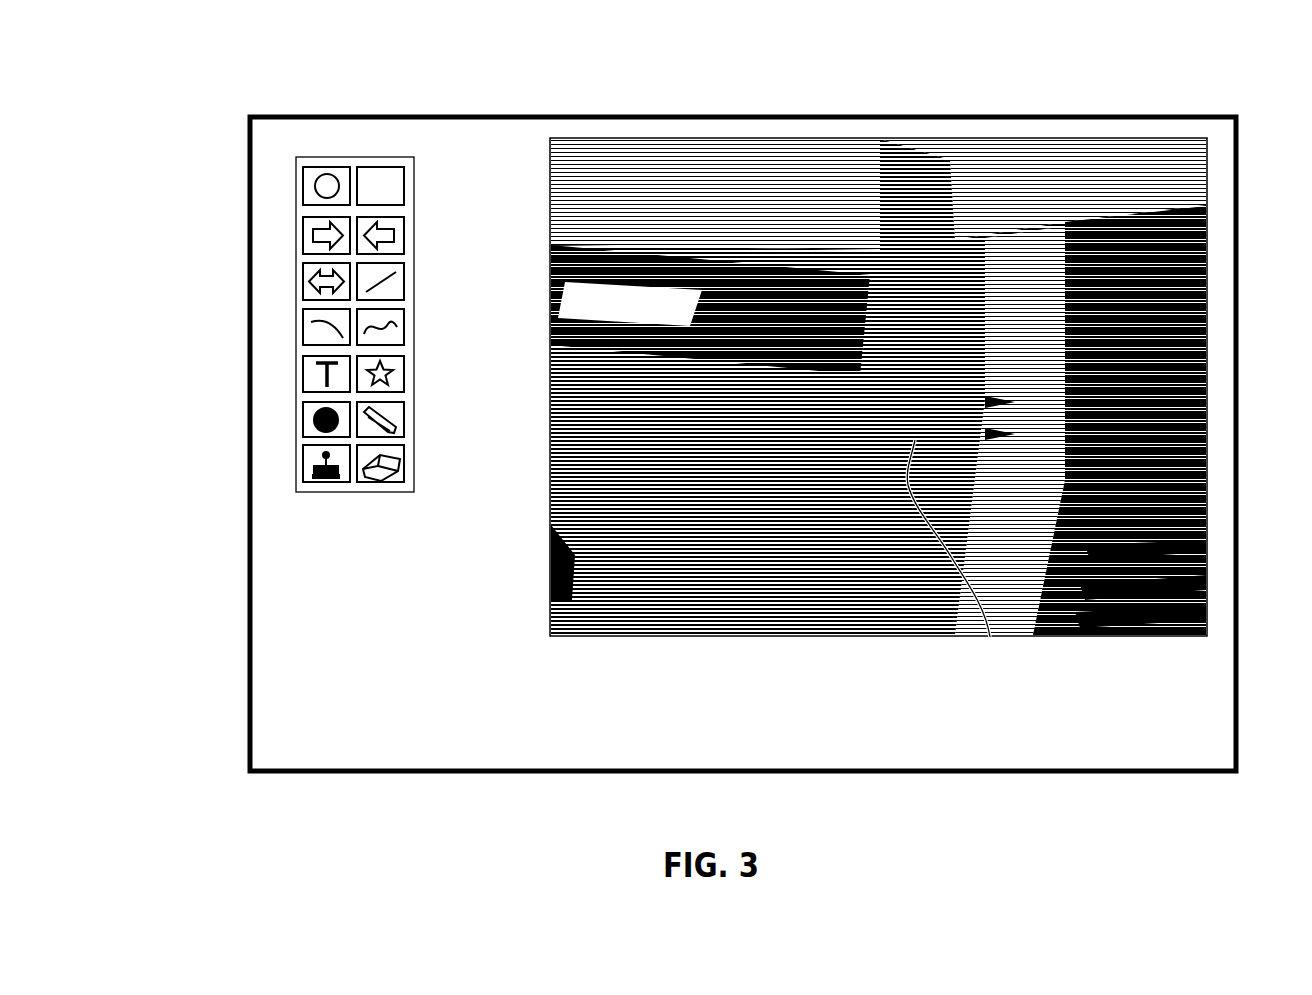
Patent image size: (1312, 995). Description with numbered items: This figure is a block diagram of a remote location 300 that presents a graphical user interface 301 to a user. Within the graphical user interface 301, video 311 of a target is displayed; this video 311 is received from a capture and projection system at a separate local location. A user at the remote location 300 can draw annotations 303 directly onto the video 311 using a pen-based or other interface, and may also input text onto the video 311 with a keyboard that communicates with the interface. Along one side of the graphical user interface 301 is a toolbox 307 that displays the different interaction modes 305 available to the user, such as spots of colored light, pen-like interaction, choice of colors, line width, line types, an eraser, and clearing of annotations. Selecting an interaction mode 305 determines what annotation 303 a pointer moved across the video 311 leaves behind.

The remote location 300 is at (514, 86).
The graphical user interface 301 is at (252, 617).
The annotations 303 is at (990, 637).
The interaction modes 305 is at (326, 178).
The toolbox 307 is at (296, 258).
The video 311 is at (1207, 192).